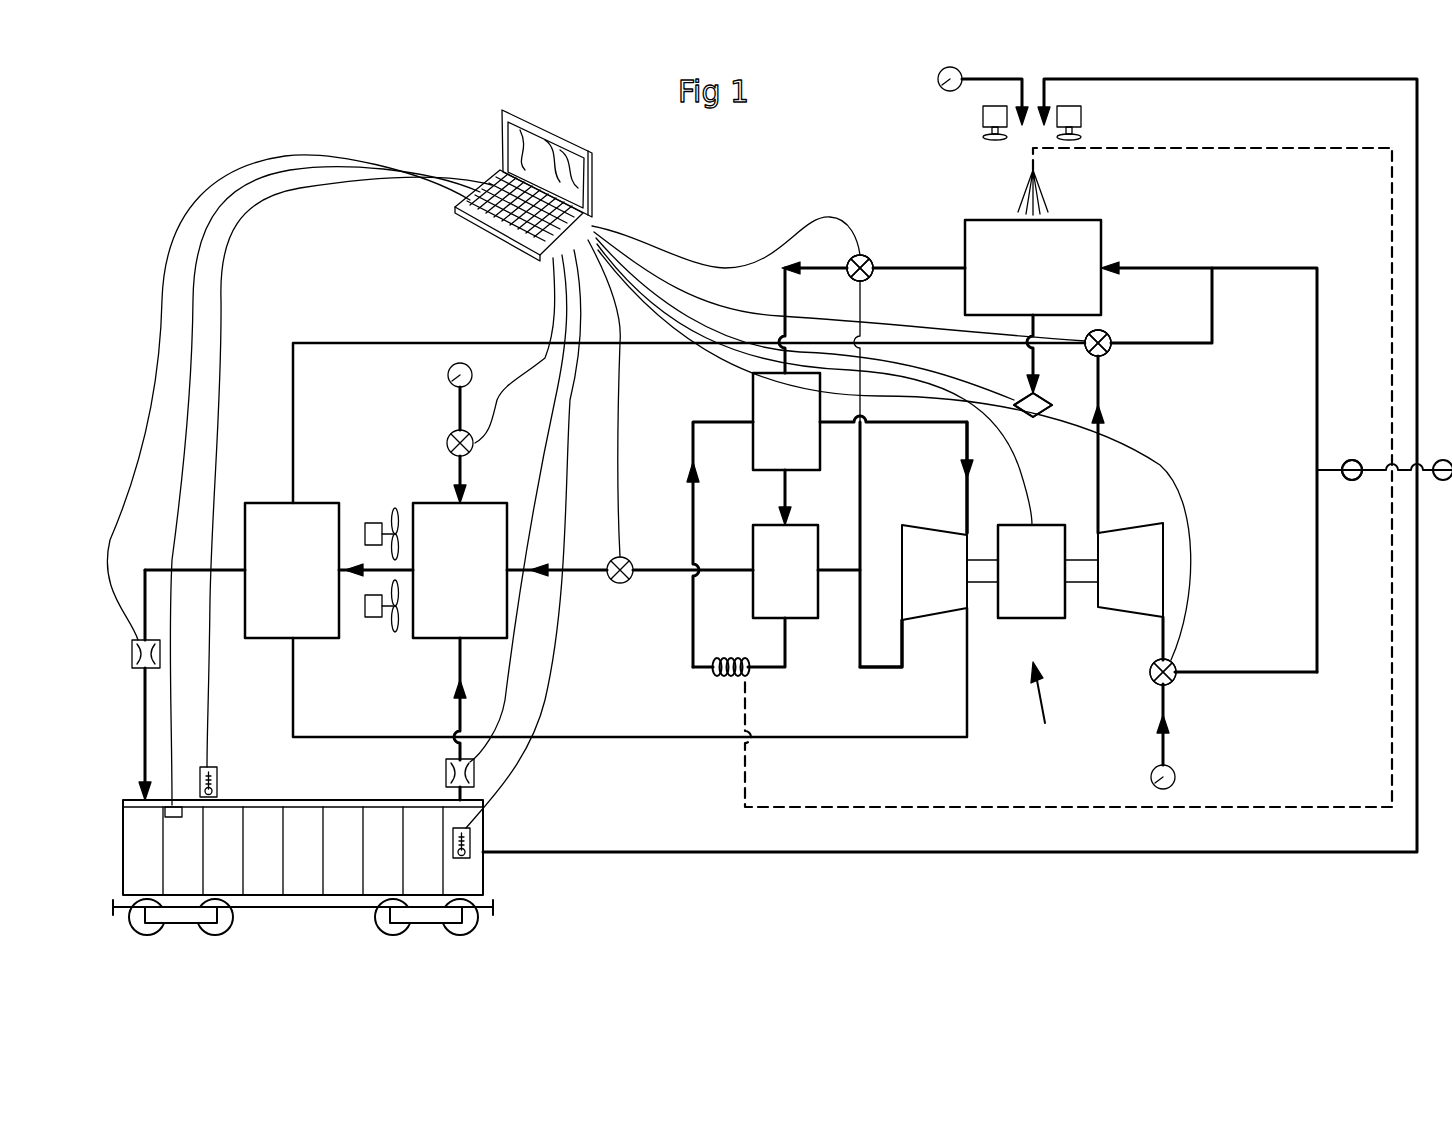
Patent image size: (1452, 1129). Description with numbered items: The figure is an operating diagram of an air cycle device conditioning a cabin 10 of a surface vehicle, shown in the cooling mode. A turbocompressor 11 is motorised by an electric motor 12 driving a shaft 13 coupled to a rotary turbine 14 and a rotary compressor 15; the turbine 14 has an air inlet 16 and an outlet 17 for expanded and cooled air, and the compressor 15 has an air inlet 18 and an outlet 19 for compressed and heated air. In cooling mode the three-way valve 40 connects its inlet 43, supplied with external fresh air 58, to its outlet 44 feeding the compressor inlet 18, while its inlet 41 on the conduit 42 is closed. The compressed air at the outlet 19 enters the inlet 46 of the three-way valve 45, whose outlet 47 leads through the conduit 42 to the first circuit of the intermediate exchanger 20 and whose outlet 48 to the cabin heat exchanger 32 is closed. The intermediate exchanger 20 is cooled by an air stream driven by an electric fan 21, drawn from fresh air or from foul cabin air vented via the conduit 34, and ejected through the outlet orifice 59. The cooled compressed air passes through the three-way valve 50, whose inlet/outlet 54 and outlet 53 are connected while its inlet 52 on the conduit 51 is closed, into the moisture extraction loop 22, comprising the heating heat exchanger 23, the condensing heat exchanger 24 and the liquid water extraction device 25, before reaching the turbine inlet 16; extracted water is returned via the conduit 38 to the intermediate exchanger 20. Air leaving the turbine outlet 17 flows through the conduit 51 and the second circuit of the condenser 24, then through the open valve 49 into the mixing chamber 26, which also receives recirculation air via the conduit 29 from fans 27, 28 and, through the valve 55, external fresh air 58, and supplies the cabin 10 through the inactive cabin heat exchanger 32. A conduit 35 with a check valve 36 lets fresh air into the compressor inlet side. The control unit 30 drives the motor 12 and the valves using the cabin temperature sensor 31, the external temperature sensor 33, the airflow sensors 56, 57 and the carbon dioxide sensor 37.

The cabin 10 is at (255, 830).
The turbocompressor 11 is at (1045, 723).
The electric motor 12 is at (1045, 622).
The shaft 13 is at (1073, 605).
The rotary turbine 14 is at (935, 540).
The rotary compressor 15 is at (1160, 548).
The air inlet of the turbine 16 is at (968, 530).
The outlet of the turbine 17 is at (865, 615).
The air inlet of the compressor 18 is at (1175, 615).
The outlet of the compressor 19 is at (1098, 540).
The intermediate air/air exchanger 20 is at (1090, 245).
The electric fan 21 is at (985, 118).
The moisture extraction loop 22 is at (803, 532).
The heating air/air heat exchanger 23 is at (755, 400).
The condensing air/air heat exchanger 24 is at (800, 535).
The liquid water extraction device 25 is at (722, 678).
The mixing chamber 26 is at (490, 518).
The electric fan 27 is at (372, 640).
The electric fan 28 is at (373, 520).
The conduit 29 is at (455, 722).
The control unit 30 is at (500, 152).
The temperature sensor 31 is at (470, 830).
The cabin heat exchanger 32 is at (280, 512).
The temperature sensor 33 is at (205, 767).
The conduit 34 is at (787, 855).
The conduit 35 is at (1350, 462).
The check valve 36 is at (1355, 478).
The carbon dioxide sensor 37 is at (168, 805).
The conduit 38 is at (1033, 808).
The controlled three-way valve 40 is at (1167, 690).
The inlet of the valve 41 is at (1172, 680).
The conduit 42 is at (1317, 430).
The inlet of the valve 43 is at (1153, 680).
The outlet of the valve 44 is at (1175, 665).
The controlled three-way valve 45 is at (1105, 350).
The inlet of the valve 46 is at (1105, 355).
The outlet of the valve 47 is at (1108, 333).
The outlet of the valve 48 is at (1048, 405).
The controlled valve 49 is at (632, 558).
The controlled three-way valve 50 is at (860, 255).
The conduit 51 is at (860, 660).
The inlet of the valve 52 is at (870, 280).
The outlet of the valve 53 is at (850, 258).
The inlet/outlet of the valve 54 is at (873, 263).
The controlled valve 55 is at (448, 440).
The airflow sensor 56 is at (135, 650).
The airflow sensor 57 is at (445, 775).
The external fresh air 58 is at (940, 79).
The outlet orifice 59 is at (1014, 400).